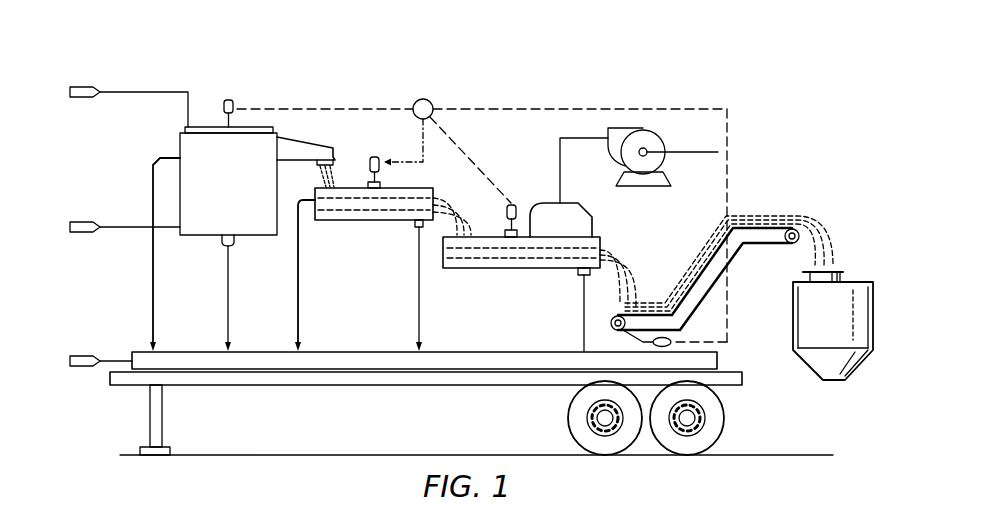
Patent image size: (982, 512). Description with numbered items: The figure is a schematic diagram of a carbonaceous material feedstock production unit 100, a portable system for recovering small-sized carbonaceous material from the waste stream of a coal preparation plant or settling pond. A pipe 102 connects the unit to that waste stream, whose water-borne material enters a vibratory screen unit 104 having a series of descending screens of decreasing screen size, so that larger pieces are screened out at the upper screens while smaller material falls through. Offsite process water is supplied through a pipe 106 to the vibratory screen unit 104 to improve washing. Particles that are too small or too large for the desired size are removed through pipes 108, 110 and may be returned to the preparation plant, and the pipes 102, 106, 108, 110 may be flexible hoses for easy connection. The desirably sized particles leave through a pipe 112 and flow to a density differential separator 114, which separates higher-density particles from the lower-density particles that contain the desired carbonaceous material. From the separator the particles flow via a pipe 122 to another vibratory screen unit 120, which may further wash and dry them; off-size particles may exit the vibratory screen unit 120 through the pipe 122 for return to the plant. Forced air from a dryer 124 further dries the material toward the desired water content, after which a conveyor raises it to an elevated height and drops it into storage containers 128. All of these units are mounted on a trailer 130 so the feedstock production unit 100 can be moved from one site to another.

The carbonaceous material feedstock production unit 100 is at (625, 64).
The pipe 102 is at (140, 91).
The vibratory screen unit 104 is at (248, 193).
The pipe 106 is at (123, 226).
The pipe 108 is at (227, 303).
The pipe 110 is at (148, 285).
The pipe 112 is at (306, 138).
The density differential separator 114 is at (360, 222).
The vibratory screen unit 120 is at (493, 268).
The pipe 122 is at (463, 210).
The dryer 124 is at (652, 187).
The storage containers 128 is at (853, 281).
The trailer 130 is at (350, 386).